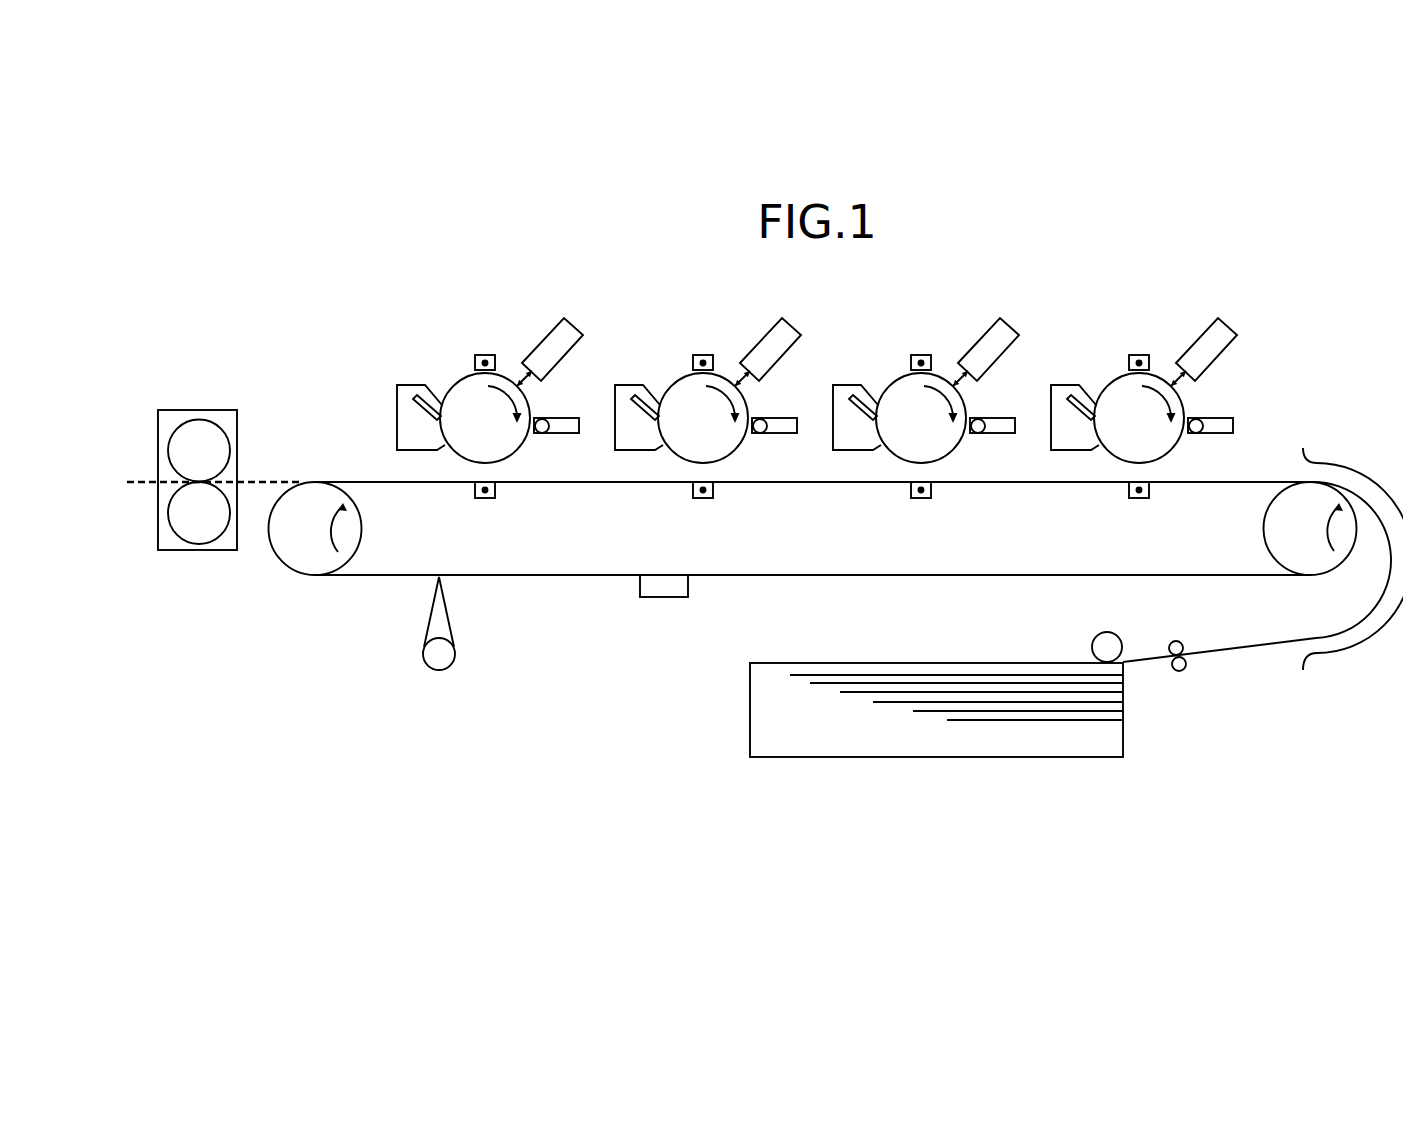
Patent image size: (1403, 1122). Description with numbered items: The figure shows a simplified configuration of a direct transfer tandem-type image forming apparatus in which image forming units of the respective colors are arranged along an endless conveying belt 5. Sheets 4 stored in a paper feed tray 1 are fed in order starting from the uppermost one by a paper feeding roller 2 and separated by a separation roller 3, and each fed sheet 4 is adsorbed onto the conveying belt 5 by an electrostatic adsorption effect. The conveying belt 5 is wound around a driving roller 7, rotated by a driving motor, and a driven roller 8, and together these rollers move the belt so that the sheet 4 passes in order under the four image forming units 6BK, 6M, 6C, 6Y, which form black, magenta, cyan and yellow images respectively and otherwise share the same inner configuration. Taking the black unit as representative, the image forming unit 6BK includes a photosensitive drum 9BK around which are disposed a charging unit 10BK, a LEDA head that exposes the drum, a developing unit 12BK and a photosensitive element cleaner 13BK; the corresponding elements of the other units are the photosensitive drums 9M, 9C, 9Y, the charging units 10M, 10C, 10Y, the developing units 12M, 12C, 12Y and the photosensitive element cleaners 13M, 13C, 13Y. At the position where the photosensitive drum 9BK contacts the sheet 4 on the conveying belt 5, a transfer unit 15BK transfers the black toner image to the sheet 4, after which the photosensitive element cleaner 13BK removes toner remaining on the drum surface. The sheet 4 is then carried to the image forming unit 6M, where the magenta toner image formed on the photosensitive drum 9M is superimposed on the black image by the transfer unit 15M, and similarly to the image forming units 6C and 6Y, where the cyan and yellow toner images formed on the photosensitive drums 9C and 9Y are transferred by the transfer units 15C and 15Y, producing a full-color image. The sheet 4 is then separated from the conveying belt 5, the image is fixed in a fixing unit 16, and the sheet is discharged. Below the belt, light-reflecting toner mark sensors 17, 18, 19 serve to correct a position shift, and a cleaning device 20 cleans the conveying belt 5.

The paper feed tray 1 is at (937, 757).
The paper feeding roller 2 is at (1093, 633).
The separation roller 3 is at (1183, 668).
The sheet 4 is at (998, 663).
The conveying belt 5 is at (753, 577).
The driving roller 7 is at (290, 570).
The driven roller 8 is at (1262, 527).
The fixing unit 16 is at (188, 422).
The light-reflecting toner mark sensor 17 is at (457, 652).
The light-reflecting toner mark sensor 18 is at (457, 652).
The light-reflecting toner mark sensor 19 is at (438, 672).
The cleaning device 20 is at (657, 597).
The image forming unit 6Y is at (477, 406).
The image forming unit 6C is at (695, 406).
The image forming unit 6M is at (913, 406).
The image forming unit 6BK is at (1131, 406).
The photosensitive drum 9Y is at (512, 456).
The photosensitive drum 9C is at (730, 456).
The photosensitive drum 9M is at (948, 456).
The photosensitive drum 9BK is at (1166, 456).
The charging unit 10Y is at (477, 355).
The charging unit 10C is at (695, 355).
The charging unit 10M is at (913, 355).
The charging unit 10BK is at (1131, 355).
The developing unit 12Y is at (557, 418).
The developing unit 12C is at (775, 418).
The developing unit 12M is at (993, 418).
The developing unit 12BK is at (1211, 418).
The photosensitive element cleaner 13Y is at (397, 386).
The photosensitive element cleaner 13C is at (615, 386).
The photosensitive element cleaner 13M is at (833, 386).
The photosensitive element cleaner 13BK is at (1051, 386).
The transfer unit 15Y is at (479, 498).
The transfer unit 15C is at (697, 498).
The transfer unit 15M is at (915, 498).
The transfer unit 15BK is at (1133, 498).